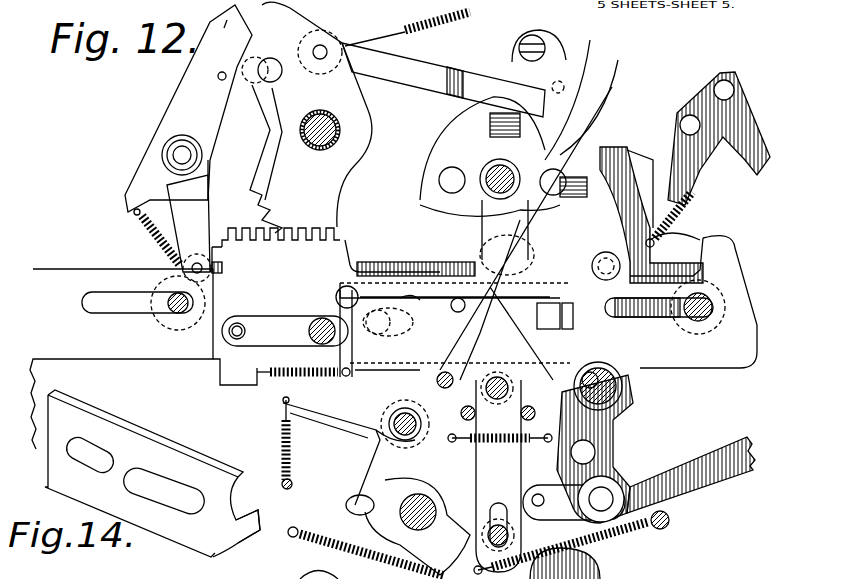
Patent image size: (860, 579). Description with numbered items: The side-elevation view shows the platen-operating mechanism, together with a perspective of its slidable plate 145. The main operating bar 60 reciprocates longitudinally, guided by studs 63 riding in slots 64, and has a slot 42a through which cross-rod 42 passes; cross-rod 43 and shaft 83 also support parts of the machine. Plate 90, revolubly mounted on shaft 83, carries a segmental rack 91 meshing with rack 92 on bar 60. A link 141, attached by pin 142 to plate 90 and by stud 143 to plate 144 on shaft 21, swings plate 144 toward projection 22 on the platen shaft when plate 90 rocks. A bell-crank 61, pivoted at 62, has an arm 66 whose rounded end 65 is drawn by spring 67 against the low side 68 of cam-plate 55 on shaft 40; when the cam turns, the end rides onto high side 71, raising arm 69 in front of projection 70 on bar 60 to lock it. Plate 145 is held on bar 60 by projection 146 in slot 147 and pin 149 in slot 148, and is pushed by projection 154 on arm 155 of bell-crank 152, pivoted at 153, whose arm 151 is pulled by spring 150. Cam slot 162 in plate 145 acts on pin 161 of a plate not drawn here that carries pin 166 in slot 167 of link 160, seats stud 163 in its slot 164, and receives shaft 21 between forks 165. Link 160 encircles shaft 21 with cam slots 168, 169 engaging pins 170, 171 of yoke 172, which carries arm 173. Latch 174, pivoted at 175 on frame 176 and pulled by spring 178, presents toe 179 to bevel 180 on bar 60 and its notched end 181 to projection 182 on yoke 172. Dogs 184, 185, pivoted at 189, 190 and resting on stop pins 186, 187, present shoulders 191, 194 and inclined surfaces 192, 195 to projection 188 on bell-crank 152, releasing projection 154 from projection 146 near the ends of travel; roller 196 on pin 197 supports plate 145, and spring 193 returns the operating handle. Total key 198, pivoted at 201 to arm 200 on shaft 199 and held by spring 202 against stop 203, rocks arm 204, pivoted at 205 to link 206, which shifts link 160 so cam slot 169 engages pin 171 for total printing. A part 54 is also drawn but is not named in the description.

In FIG. 12, the shaft 21 is at (526, 233).
In FIG. 12, the projection 22 is at (528, 45).
In FIG. 12, the shaft 40 is at (418, 494).
In FIG. 12, the cross-rod 42 is at (300, 330).
In FIG. 12, the slot 42a is at (250, 300).
In FIG. 12, the cross-rod 43 is at (625, 378).
In FIG. 12, the spring 54 is at (620, 538).
In FIG. 12, the cam-plate 55 is at (430, 545).
In FIG. 12, the main operating bar 60 is at (135, 272).
In FIG. 12, the bell-crank 61 is at (372, 432).
In FIG. 12, the pivot 62 is at (395, 420).
In FIG. 12, the studs 63 is at (170, 305).
In FIG. 12, the slots 64 is at (110, 308).
In FIG. 12, the rounded end 65 is at (352, 512).
In FIG. 12, the arm 66 is at (392, 447).
In FIG. 12, the spring 67 is at (290, 442).
In FIG. 12, the low side 68 is at (355, 495).
In FIG. 12, the arm 69 is at (270, 405).
In FIG. 12, the projection 70 is at (220, 380).
In FIG. 12, the high side 71 is at (400, 540).
In FIG. 12, the shaft 83 is at (312, 150).
In FIG. 12, the plate 90 is at (317, 114).
In FIG. 12, the segmental rack 91 is at (255, 208).
In FIG. 12, the rack 92 is at (275, 222).
In FIG. 12, the link 141 is at (443, 80).
In FIG. 12, the pin 142 is at (321, 49).
In FIG. 12, the stud 143 is at (562, 80).
In FIG. 12, the plate 144 is at (592, 92).
In FIG. 12, the slidable plate 145 is at (316, 207).
In FIG. 14, the slidable plate 145 is at (115, 432).
In FIG. 12, the projection 146 is at (628, 305).
In FIG. 14, the projection 146 is at (233, 525).
In FIG. 12, the slot 147 is at (590, 322).
In FIG. 12, the slot 148 is at (378, 325).
In FIG. 14, the slot 148 is at (83, 470).
In FIG. 12, the pin 149 is at (358, 336).
In FIG. 12, the spring 150 is at (270, 372).
In FIG. 12, the arm 151 is at (340, 400).
In FIG. 12, the bell-crank 152 is at (320, 322).
In FIG. 12, the pivot 153 is at (335, 290).
In FIG. 12, the projection 154 is at (560, 330).
In FIG. 12, the arm 155 is at (400, 282).
In FIG. 12, the link 160 is at (605, 150).
In FIG. 12, the pin 161 is at (445, 332).
In FIG. 14, the cam slot 162 is at (163, 500).
In FIG. 12, the stud 163 is at (508, 535).
In FIG. 12, the slot 164 is at (520, 514).
In FIG. 12, the forks 165 is at (480, 165).
In FIG. 12, the pin 166 is at (503, 357).
In FIG. 12, the slot 167 is at (503, 487).
In FIG. 12, the cam slot 168 is at (493, 170).
In FIG. 12, the cam slot 169 is at (572, 150).
In FIG. 12, the pin 170 is at (445, 178).
In FIG. 12, the pin 171 is at (563, 194).
In FIG. 12, the yoke 172 is at (430, 200).
In FIG. 12, the arm 173 is at (458, 118).
In FIG. 12, the latch 174 is at (650, 190).
In FIG. 12, the pivot 175 is at (603, 262).
In FIG. 12, the frame 176 is at (700, 475).
In FIG. 12, the spring 178 is at (695, 192).
In FIG. 12, the toe 179 is at (478, 255).
In FIG. 12, the bevel 180 is at (455, 265).
In FIG. 12, the notched end 181 is at (625, 165).
In FIG. 12, the projection 182 is at (485, 470).
In FIG. 12, the dog 184 is at (430, 380).
In FIG. 12, the dog 185 is at (596, 380).
In FIG. 12, the stop pin 186 is at (468, 442).
In FIG. 12, the stop pin 187 is at (575, 432).
In FIG. 12, the projection 188 is at (452, 306).
In FIG. 12, the pivot 189 is at (440, 378).
In FIG. 12, the pivot 190 is at (590, 376).
In FIG. 12, the shoulder 191 is at (420, 302).
In FIG. 12, the inclined surface 192 is at (580, 262).
In FIG. 12, the spring 193 is at (435, 27).
In FIG. 12, the shoulder 194 is at (557, 262).
In FIG. 12, the inclined surface 195 is at (539, 212).
In FIG. 12, the antifriction roller 196 is at (488, 392).
In FIG. 12, the pin 197 is at (511, 337).
In FIG. 12, the total key 198 is at (227, 20).
In FIG. 12, the shaft 199 is at (180, 153).
In FIG. 12, the arm 200 is at (205, 112).
In FIG. 12, the pivot 201 is at (260, 57).
In FIG. 12, the spring 202 is at (134, 212).
In FIG. 12, the stop 203 is at (218, 76).
In FIG. 12, the arm 204 is at (212, 178).
In FIG. 12, the pivot 205 is at (197, 262).
In FIG. 12, the link 206 is at (375, 262).